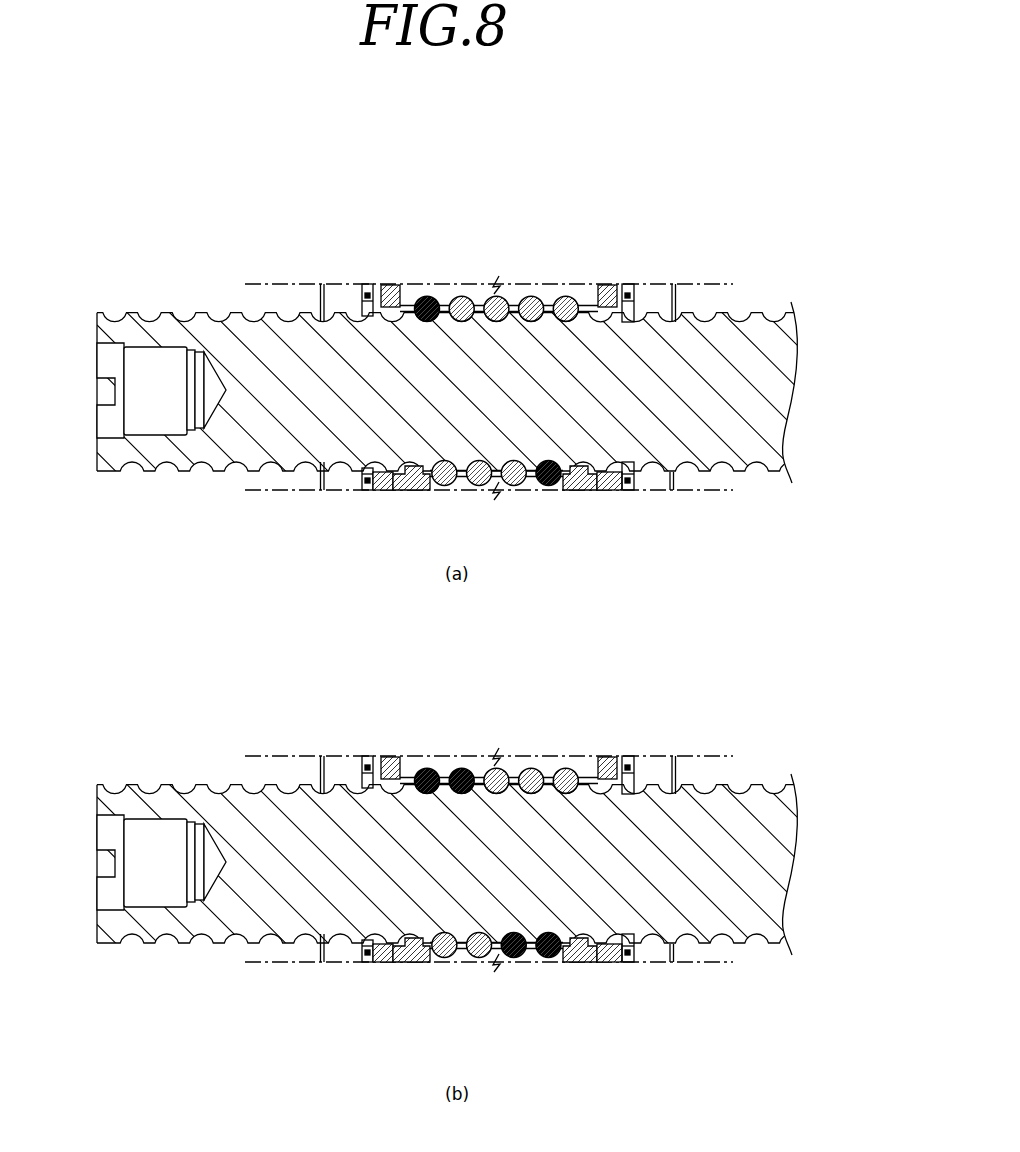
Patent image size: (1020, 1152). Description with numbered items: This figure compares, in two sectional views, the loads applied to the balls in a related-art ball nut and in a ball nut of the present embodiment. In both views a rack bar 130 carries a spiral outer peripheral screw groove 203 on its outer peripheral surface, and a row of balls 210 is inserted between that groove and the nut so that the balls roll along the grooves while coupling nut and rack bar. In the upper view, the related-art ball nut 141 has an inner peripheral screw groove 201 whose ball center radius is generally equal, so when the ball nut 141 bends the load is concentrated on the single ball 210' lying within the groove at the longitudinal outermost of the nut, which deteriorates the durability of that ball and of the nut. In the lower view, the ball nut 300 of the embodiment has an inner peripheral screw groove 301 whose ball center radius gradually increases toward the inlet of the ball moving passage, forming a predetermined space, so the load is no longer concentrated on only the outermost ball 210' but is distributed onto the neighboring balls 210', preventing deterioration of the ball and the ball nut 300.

The rack bar 130 is at (187, 468).
The ball nut 141 is at (335, 300).
The inner peripheral screw groove 201 is at (433, 296).
The outer peripheral screw groove 203 is at (238, 467).
The ball 210 is at (505, 598).
The ball 210' is at (498, 627).
The ball nut 300 is at (335, 772).
The inner peripheral screw groove 301 is at (462, 768).